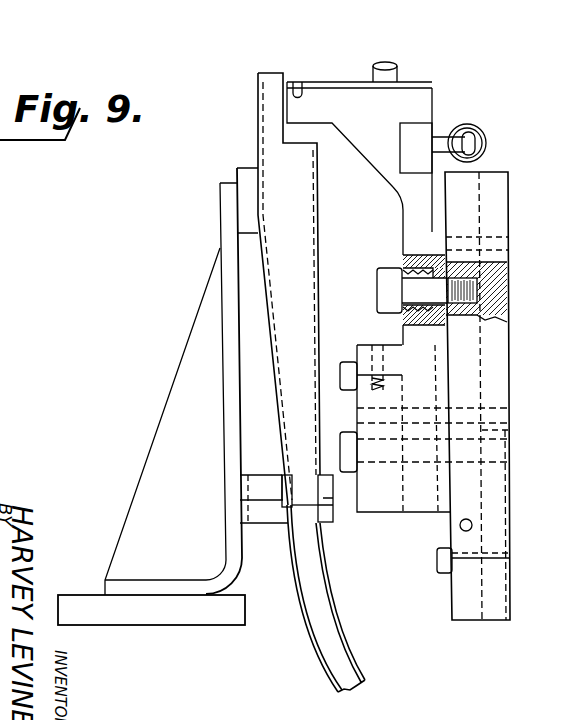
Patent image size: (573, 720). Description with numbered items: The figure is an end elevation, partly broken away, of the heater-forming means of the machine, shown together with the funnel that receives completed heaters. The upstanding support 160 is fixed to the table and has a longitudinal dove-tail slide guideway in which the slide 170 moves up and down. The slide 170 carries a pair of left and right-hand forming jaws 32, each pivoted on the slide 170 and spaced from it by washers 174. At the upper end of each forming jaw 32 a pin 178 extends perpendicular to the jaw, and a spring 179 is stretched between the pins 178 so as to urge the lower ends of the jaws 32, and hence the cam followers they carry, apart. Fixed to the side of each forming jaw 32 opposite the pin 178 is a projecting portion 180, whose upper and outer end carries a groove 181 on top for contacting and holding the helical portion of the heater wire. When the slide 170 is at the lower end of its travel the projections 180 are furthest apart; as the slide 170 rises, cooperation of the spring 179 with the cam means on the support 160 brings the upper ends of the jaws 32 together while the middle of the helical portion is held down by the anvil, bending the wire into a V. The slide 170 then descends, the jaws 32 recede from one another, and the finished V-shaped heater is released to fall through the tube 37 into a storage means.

The forming jaw 32 is at (432, 95).
The tube 37 is at (337, 600).
The upstanding support 160 is at (452, 607).
The slide 170 is at (507, 312).
The washer 174 is at (430, 262).
The pin 178 is at (448, 136).
The spring 179 is at (482, 130).
The projecting portion 180 is at (338, 82).
The groove 181 is at (297, 80).